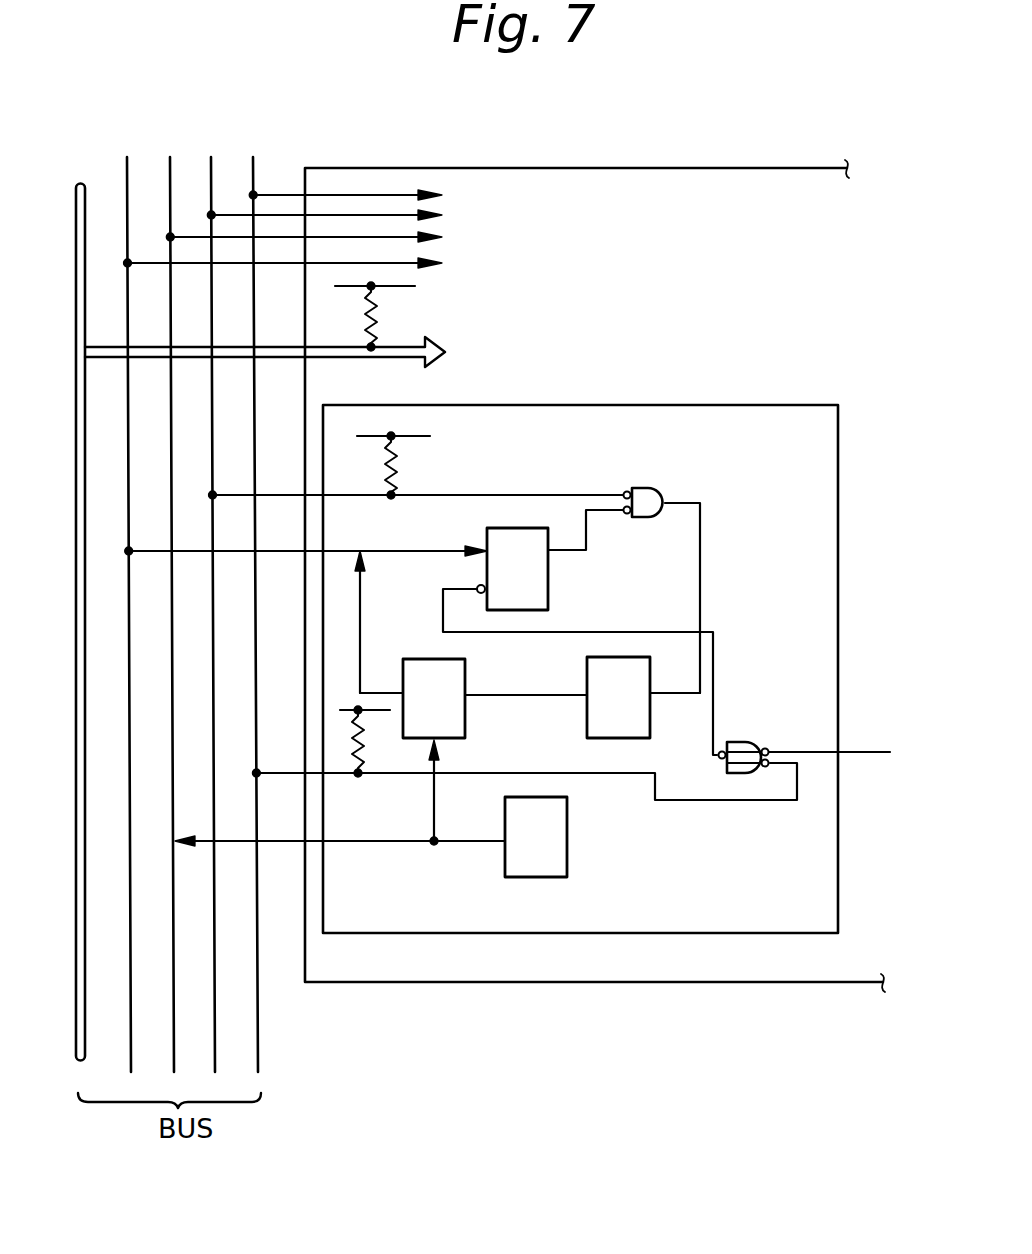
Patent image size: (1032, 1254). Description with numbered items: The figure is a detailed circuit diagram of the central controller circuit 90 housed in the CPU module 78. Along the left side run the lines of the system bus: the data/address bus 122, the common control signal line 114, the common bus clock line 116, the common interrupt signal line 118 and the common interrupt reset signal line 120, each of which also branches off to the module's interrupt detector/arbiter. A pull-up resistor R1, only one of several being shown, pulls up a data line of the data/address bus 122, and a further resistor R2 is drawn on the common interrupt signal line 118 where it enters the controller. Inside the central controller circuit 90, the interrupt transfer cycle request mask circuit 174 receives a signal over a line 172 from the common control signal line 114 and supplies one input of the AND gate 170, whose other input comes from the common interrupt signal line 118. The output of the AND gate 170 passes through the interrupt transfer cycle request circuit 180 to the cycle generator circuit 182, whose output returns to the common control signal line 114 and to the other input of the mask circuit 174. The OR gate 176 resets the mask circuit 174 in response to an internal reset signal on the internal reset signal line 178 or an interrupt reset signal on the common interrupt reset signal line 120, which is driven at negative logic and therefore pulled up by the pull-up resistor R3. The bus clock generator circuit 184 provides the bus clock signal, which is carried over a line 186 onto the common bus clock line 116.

The CPU module 78 is at (598, 168).
The central controller circuit 90 is at (521, 403).
The common control signal line 114 is at (127, 157).
The common bus clock line 116 is at (170, 157).
The common interrupt signal line 118 is at (211, 157).
The common interrupt reset signal line 120 is at (253, 157).
The data/address bus 122 is at (84, 186).
The AND gate 170 is at (640, 488).
The signal line 172 is at (400, 551).
The interrupt transfer cycle request mask circuit 174 is at (548, 582).
The OR gate 176 is at (748, 741).
The internal reset signal line 178 is at (858, 750).
The interrupt transfer cycle request circuit 180 is at (587, 722).
The cycle generator circuit 182 is at (410, 657).
The bus clock generator circuit 184 is at (567, 843).
The signal line 186 is at (378, 845).
The pull-up resistor R1 is at (378, 316).
The resistor R2 is at (399, 468).
The pull-up resistor R3 is at (365, 742).